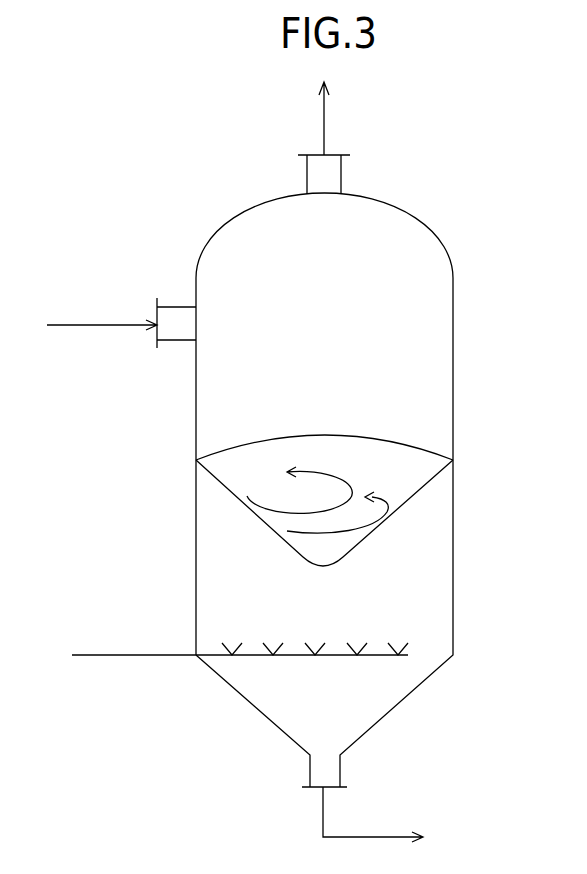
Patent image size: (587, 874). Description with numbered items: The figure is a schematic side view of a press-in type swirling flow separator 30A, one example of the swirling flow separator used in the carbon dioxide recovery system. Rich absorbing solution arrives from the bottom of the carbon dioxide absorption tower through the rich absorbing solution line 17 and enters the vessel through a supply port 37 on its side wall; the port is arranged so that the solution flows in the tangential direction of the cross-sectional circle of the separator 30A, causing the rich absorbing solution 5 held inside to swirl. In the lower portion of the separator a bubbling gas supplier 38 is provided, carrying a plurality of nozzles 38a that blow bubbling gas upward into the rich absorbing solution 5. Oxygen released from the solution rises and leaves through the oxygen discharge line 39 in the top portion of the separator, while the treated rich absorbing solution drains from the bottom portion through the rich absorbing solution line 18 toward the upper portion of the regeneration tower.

The press-in type swirling flow separator 30A is at (207, 245).
The oxygen discharge line 39 is at (341, 175).
The supply port 37 is at (177, 343).
The rich absorbing solution line 17 is at (83, 323).
The rich absorbing solution 5 is at (213, 530).
The bubbling gas supplier 38 is at (123, 655).
The nozzles 38a is at (407, 648).
The rich absorbing solution line 18 is at (377, 837).